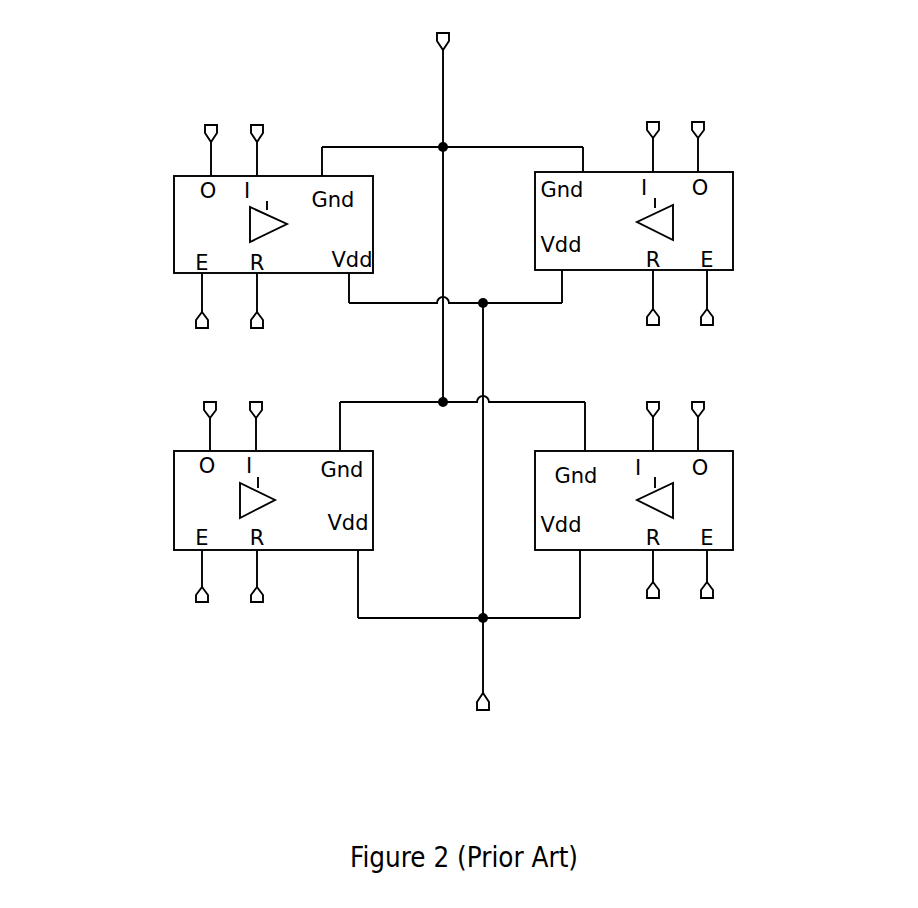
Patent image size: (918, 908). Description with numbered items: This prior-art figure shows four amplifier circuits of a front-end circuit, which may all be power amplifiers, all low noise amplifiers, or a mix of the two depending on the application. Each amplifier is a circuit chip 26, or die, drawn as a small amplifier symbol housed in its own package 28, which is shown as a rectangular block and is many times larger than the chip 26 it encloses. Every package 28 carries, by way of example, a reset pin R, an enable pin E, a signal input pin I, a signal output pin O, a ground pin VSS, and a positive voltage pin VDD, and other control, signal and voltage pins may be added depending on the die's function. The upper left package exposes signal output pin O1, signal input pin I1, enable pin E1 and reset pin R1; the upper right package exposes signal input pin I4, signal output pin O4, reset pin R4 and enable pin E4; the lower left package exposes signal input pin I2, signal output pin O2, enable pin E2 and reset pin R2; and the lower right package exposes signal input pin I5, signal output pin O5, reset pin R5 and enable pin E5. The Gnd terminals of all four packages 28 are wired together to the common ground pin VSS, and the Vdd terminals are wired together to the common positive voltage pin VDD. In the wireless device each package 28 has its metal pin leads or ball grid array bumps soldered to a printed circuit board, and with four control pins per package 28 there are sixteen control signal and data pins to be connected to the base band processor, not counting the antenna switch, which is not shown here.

The circuit chip 26 is at (449, 358).
The package 28 is at (453, 368).
The ground pin VSS is at (453, 205).
The positive voltage pin VDD is at (464, 519).
The signal output pin O1 is at (211, 134).
The signal input pin I1 is at (257, 134).
The enable pin E1 is at (202, 315).
The reset pin R1 is at (258, 315).
The signal input pin I4 is at (653, 133).
The signal output pin O4 is at (699, 133).
The reset pin R4 is at (653, 314).
The enable pin E4 is at (707, 314).
The signal input pin I2 is at (210, 412).
The signal output pin O2 is at (254, 412).
The enable pin E2 is at (202, 591).
The reset pin R2 is at (258, 591).
The signal input pin I5 is at (653, 412).
The signal output pin O5 is at (698, 412).
The reset pin R5 is at (653, 591).
The enable pin E5 is at (707, 591).